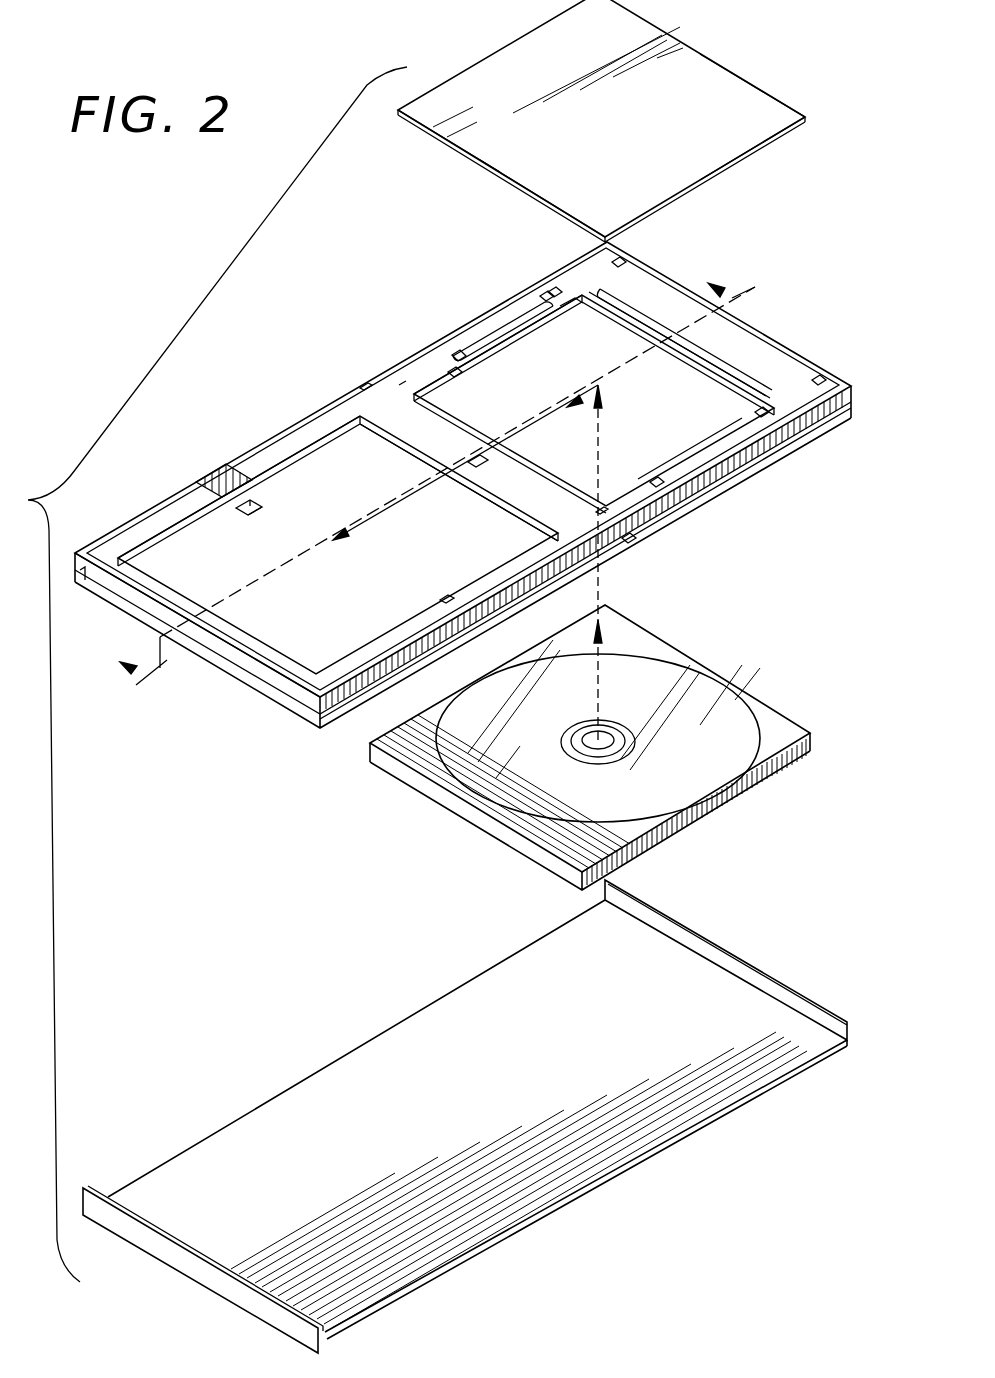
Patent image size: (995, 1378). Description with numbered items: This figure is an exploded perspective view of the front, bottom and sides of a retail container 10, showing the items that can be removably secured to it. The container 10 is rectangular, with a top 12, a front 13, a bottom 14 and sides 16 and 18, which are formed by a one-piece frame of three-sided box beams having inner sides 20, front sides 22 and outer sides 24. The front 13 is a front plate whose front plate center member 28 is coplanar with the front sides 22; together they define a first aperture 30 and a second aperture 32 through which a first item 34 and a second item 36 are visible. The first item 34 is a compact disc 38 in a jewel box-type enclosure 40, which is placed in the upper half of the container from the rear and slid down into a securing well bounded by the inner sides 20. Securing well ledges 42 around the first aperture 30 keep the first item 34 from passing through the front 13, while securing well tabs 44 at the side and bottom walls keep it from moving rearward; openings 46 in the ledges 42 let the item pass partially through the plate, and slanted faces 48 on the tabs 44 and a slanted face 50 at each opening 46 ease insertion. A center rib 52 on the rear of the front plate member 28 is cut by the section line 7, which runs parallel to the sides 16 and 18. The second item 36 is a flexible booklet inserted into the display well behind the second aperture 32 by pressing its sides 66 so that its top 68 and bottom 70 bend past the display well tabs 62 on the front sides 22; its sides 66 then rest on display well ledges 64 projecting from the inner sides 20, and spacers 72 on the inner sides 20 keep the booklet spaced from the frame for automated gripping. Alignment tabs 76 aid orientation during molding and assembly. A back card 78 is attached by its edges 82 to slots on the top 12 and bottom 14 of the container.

The section line 7— 7 is at (425, 480).
The retail container 10 is at (368, 364).
The top 12 is at (668, 275).
The front 13 is at (433, 436).
The bottom 14 is at (228, 668).
The side 16 is at (775, 455).
The side 18 is at (472, 308).
The inner sides 20 is at (512, 318).
The front sides 22 is at (776, 350).
The outer sides 24 is at (110, 598).
The front plate center member 28 is at (402, 372).
The first aperture 30 is at (168, 520).
The second aperture 32 is at (545, 292).
The first item 34 is at (688, 820).
The second item 36 is at (531, 52).
The compact disc 38 is at (708, 688).
The jewel box-type enclosure 40 is at (782, 720).
The securing well ledges 42 is at (320, 448).
The securing well tabs 44 is at (246, 514).
The openings 46 is at (268, 498).
The faces 48 is at (252, 511).
The face 50 is at (215, 480).
The center rib 52 is at (470, 470).
The display well tabs 62 is at (556, 268).
The display well ledges 64 is at (628, 306).
The sides 66 is at (460, 102).
The top 68 is at (728, 62).
The bottom 70 is at (488, 165).
The spacers 72 is at (618, 262).
The alignment tabs 76 is at (352, 382).
The back card 78 is at (340, 1060).
The edges 82 is at (738, 954).